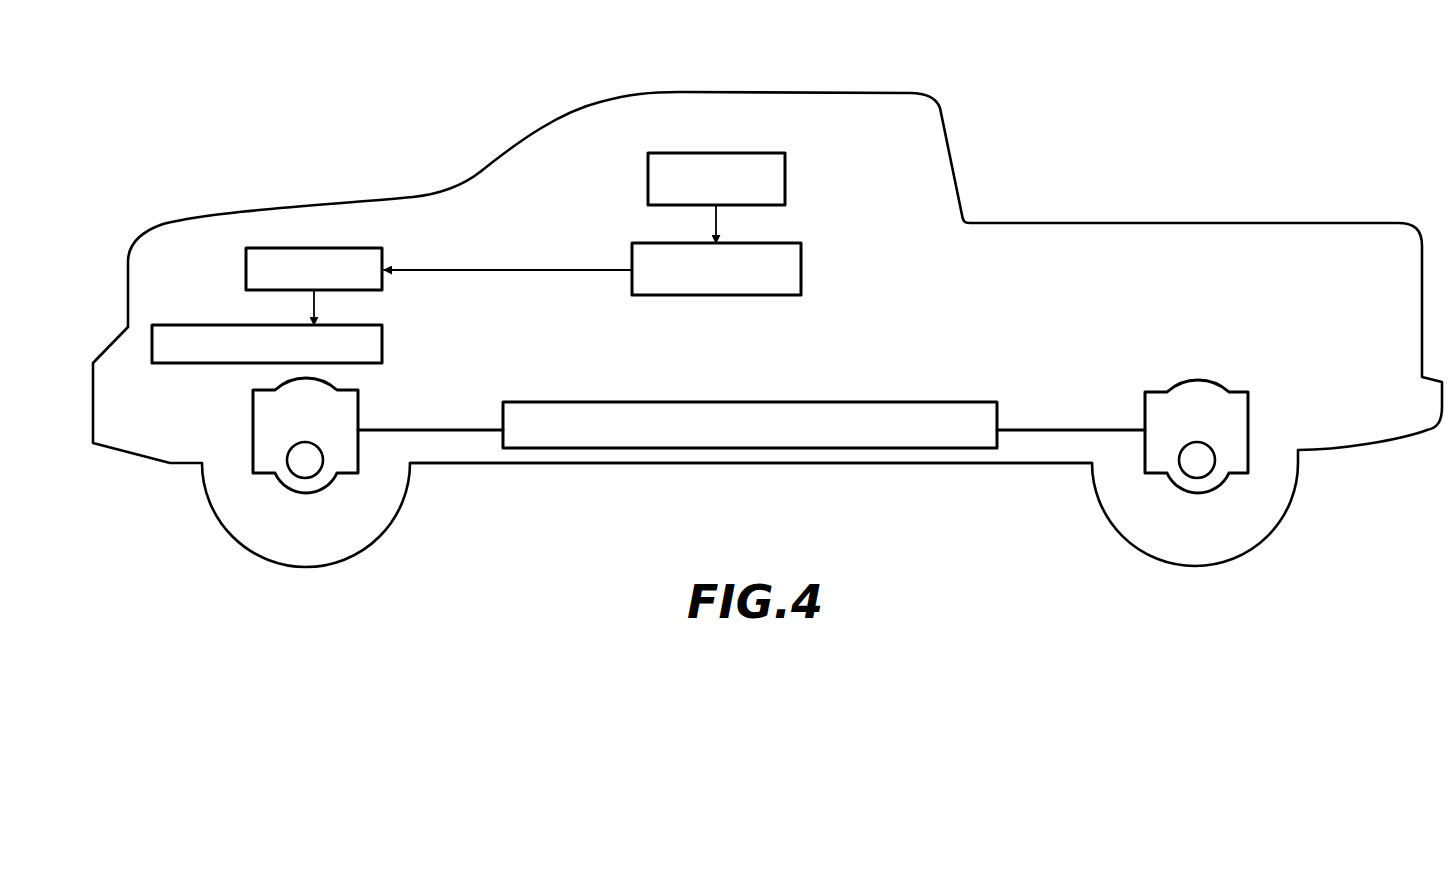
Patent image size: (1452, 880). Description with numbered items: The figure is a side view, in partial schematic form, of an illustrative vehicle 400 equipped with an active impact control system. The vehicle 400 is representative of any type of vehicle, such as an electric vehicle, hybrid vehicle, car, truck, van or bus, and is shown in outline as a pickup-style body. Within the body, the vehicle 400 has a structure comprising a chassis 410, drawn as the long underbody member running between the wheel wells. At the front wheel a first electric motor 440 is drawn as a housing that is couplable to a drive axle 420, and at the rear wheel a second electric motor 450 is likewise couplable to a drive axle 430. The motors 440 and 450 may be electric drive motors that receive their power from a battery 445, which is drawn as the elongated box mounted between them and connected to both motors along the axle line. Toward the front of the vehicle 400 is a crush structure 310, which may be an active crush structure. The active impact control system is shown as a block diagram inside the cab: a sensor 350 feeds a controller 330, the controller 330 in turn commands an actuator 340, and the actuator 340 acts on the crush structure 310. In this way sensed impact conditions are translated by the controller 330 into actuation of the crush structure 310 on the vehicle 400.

The vehicle 400 is at (336, 92).
The crush structure 310 is at (208, 325).
The controller 330 is at (802, 263).
The actuator 340 is at (325, 248).
The sensor 350 is at (786, 178).
The chassis 410 is at (880, 465).
The drive axle 420 is at (304, 465).
The drive axle 430 is at (1196, 465).
The electric motor 440 is at (358, 405).
The battery 445 is at (565, 402).
The electric motor 450 is at (1172, 385).